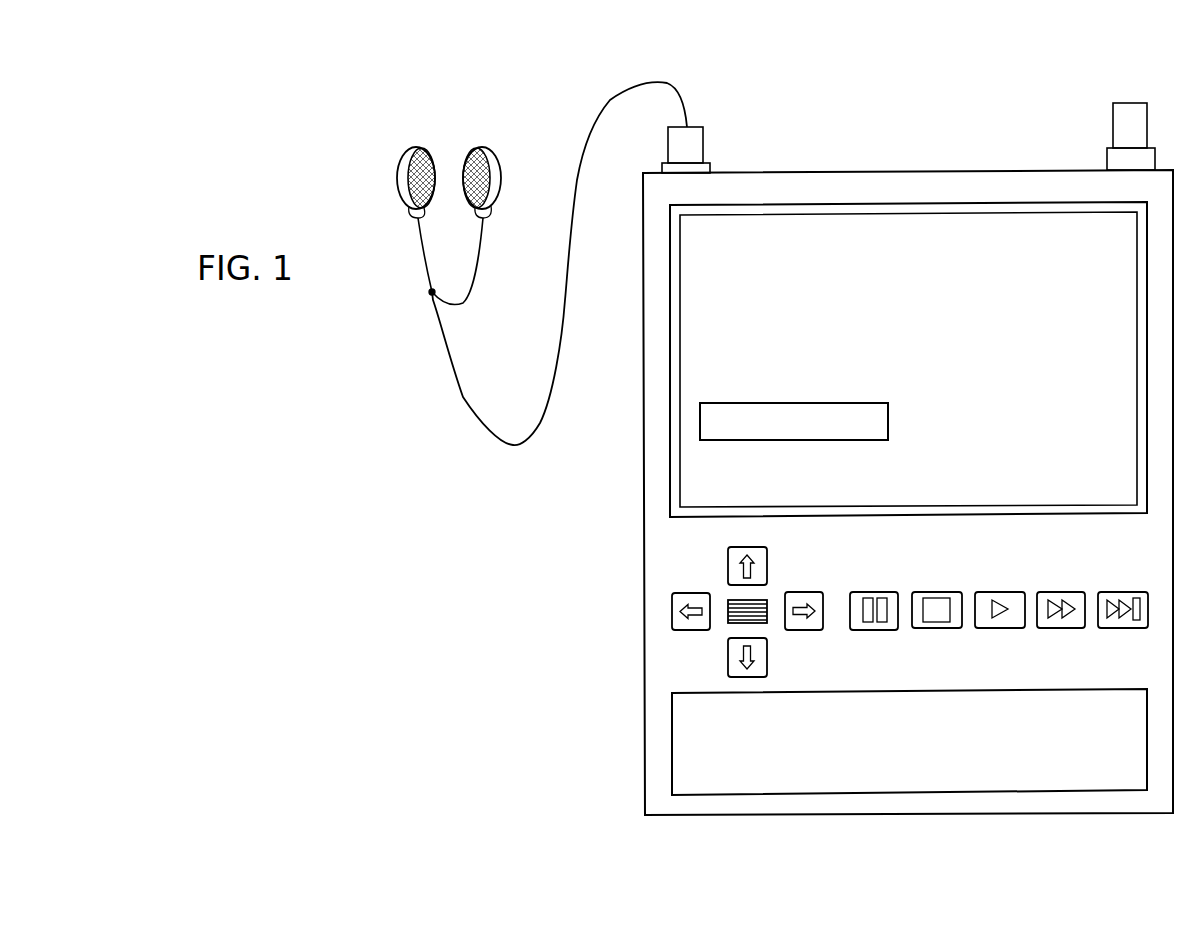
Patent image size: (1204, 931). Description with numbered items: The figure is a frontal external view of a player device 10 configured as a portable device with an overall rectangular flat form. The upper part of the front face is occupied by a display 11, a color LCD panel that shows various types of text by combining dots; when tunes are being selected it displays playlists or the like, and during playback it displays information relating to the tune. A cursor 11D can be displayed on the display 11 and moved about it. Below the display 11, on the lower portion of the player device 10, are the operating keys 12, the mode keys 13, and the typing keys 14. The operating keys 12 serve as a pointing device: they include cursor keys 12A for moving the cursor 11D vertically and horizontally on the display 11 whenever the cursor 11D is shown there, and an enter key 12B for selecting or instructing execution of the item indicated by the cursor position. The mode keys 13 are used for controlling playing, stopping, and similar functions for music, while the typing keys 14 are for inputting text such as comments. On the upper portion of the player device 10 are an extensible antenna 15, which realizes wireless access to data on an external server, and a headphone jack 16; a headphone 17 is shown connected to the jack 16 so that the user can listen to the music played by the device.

The player device 10 is at (581, 588).
The display 11 is at (1125, 462).
The cursor 11D is at (793, 440).
The operating keys 12 is at (702, 573).
The cursor keys 12A is at (813, 592).
The enter key 12B is at (728, 617).
The mode keys 13 is at (937, 629).
The typing keys 14 is at (860, 795).
The extensible antenna 15 is at (1132, 103).
The headphone jack 16 is at (692, 125).
The headphone 17 is at (461, 143).